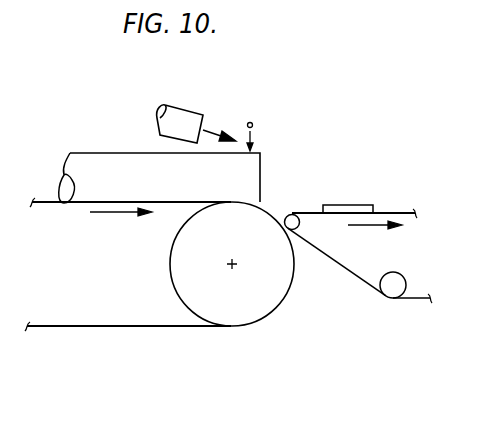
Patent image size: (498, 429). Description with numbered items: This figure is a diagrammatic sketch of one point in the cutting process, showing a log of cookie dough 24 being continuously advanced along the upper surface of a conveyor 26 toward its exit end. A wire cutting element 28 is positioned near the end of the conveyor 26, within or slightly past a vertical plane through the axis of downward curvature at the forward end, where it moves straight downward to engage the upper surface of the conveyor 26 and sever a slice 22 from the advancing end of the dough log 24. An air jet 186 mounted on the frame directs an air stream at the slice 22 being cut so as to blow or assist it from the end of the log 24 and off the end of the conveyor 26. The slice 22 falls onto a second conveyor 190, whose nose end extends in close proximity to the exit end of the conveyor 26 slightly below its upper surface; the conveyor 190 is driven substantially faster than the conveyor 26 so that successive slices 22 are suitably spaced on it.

The slice 22 is at (348, 205).
The log of cookie dough 24 is at (115, 153).
The conveyor 26 is at (48, 200).
The wire cutting element 28 is at (253, 123).
The air jet 186 is at (187, 118).
The conveyor 190 is at (383, 212).